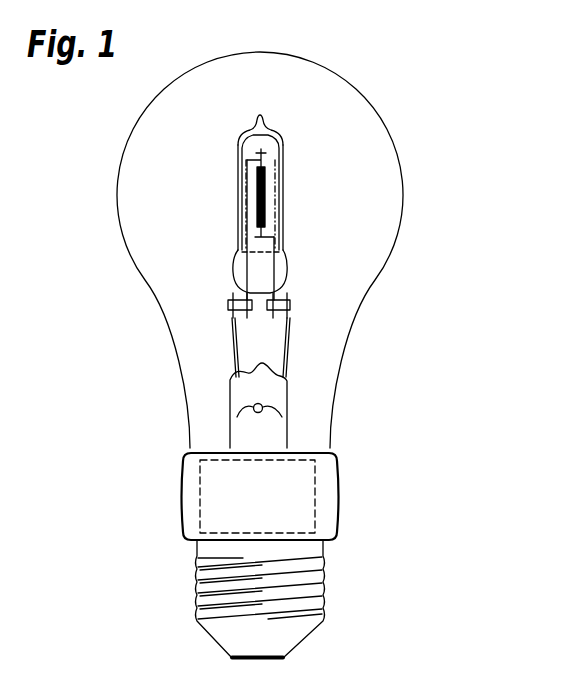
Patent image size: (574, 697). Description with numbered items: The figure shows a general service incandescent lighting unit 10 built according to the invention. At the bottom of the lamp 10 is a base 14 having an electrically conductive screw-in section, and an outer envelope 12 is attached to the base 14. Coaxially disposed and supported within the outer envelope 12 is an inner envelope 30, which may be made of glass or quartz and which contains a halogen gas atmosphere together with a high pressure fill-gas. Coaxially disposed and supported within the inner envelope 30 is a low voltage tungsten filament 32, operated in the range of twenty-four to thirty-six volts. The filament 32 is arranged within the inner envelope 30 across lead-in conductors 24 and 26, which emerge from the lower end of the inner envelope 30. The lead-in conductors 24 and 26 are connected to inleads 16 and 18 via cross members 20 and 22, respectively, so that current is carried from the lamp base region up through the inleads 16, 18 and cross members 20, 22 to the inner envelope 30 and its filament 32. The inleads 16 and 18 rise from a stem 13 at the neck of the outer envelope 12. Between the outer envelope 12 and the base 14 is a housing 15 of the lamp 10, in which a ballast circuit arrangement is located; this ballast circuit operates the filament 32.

The general service incandescent lighting unit 10 is at (309, 355).
The outer envelope 12 is at (403, 195).
The glass stem 13 is at (288, 387).
The base 14 is at (323, 583).
The housing 15 is at (338, 488).
The inlead 16 is at (233, 340).
The inlead 18 is at (288, 330).
The cross member 20 is at (226, 302).
The cross member 22 is at (290, 300).
The lead-in conductor 24 is at (247, 206).
The lead-in conductor 26 is at (278, 252).
The inner envelope 30 is at (273, 132).
The low voltage tungsten filament 32 is at (265, 180).